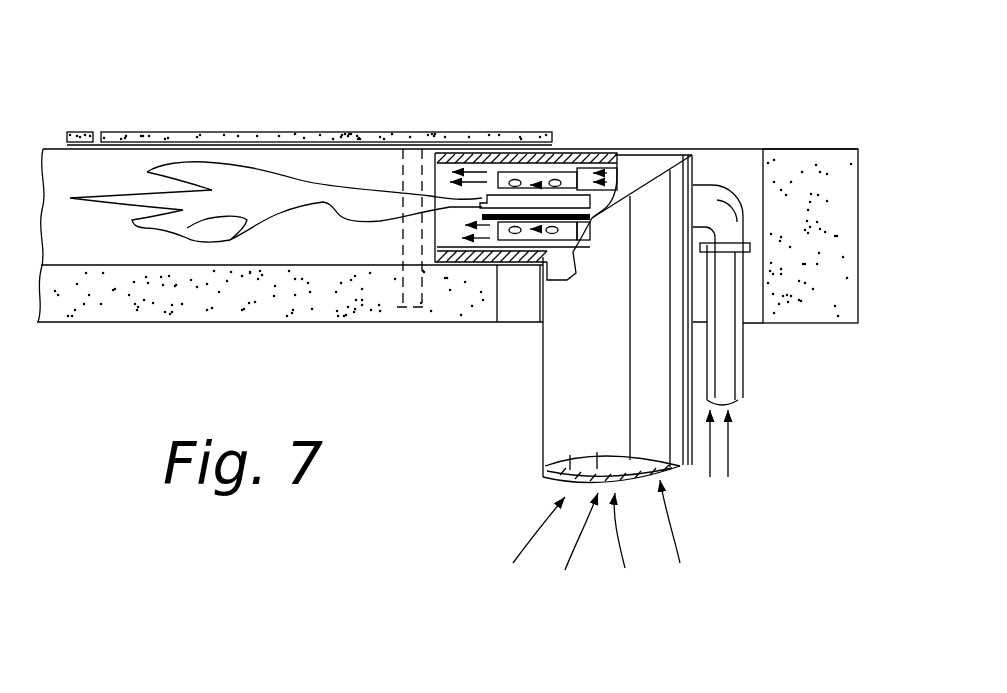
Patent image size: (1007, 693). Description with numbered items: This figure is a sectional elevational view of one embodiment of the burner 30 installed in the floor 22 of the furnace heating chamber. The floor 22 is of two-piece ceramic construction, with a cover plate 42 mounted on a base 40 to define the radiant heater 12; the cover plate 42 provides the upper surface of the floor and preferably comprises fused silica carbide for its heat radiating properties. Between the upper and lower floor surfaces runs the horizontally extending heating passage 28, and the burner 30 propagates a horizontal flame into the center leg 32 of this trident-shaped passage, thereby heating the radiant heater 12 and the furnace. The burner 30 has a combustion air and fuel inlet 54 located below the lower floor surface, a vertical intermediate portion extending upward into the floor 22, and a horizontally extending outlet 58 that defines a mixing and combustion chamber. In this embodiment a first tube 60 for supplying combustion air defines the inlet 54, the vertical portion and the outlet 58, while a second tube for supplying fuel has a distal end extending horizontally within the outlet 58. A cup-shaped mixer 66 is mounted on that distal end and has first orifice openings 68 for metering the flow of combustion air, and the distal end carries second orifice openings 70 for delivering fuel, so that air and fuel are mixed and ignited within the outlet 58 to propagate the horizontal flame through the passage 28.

The radiant heater 12 is at (452, 118).
The floor 22 is at (250, 130).
The heating passage 28 is at (337, 232).
The burner 30 is at (577, 348).
The center leg 32 is at (237, 181).
The base 40 is at (150, 293).
The cover plate 42 is at (157, 132).
The combustion air and fuel inlet 54 is at (578, 393).
The horizontally extending outlet 58 is at (557, 172).
The first tube 60 is at (557, 443).
The mixer 66 is at (600, 168).
The first orifice openings 68 is at (587, 165).
The second orifice openings 70 is at (487, 200).